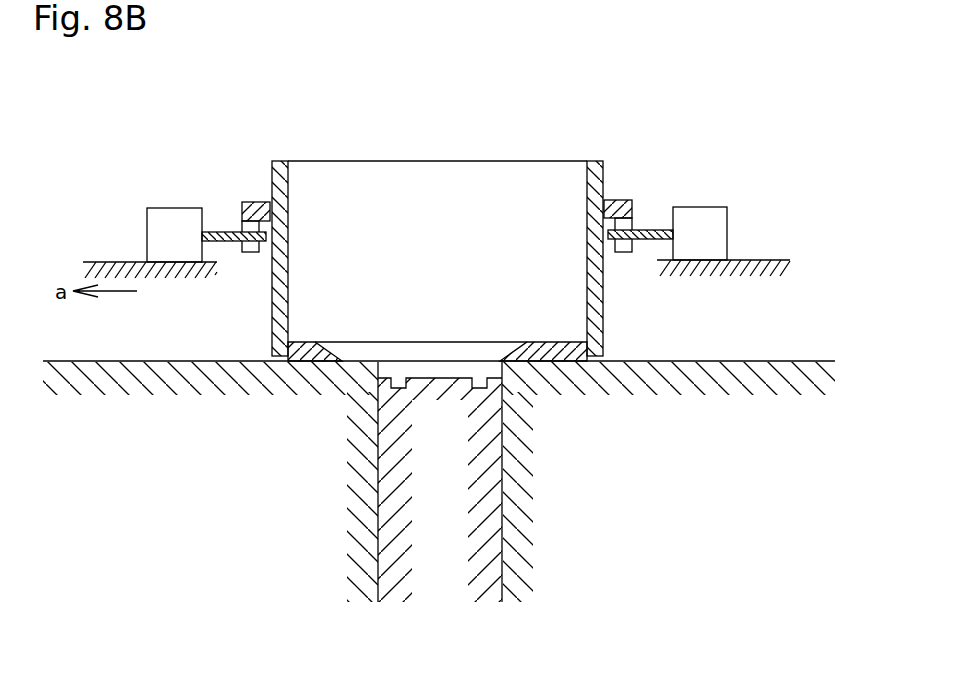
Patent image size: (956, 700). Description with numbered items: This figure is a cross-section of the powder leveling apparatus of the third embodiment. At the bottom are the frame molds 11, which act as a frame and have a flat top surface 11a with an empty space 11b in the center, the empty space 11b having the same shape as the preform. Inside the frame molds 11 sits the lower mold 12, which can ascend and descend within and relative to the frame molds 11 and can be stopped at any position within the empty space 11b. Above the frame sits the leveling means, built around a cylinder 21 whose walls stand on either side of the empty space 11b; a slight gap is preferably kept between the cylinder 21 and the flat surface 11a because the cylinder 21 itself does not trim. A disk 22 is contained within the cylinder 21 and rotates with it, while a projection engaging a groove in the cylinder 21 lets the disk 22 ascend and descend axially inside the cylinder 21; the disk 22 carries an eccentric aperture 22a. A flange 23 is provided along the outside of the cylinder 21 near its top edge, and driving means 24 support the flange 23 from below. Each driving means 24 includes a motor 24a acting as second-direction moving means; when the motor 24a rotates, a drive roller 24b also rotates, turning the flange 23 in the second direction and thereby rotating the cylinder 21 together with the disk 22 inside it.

The frame mold 11 is at (255, 479).
The flat top surface 11a is at (213, 361).
The empty space 11b is at (442, 368).
The lower mold 12 is at (503, 505).
The cylinder 21 is at (277, 161).
The disk 22 is at (560, 340).
The eccentric aperture 22a is at (368, 352).
The flange 23 is at (250, 202).
The driving means 24 is at (436, 228).
The motor 24a is at (173, 208).
The drive roller 24b is at (250, 253).